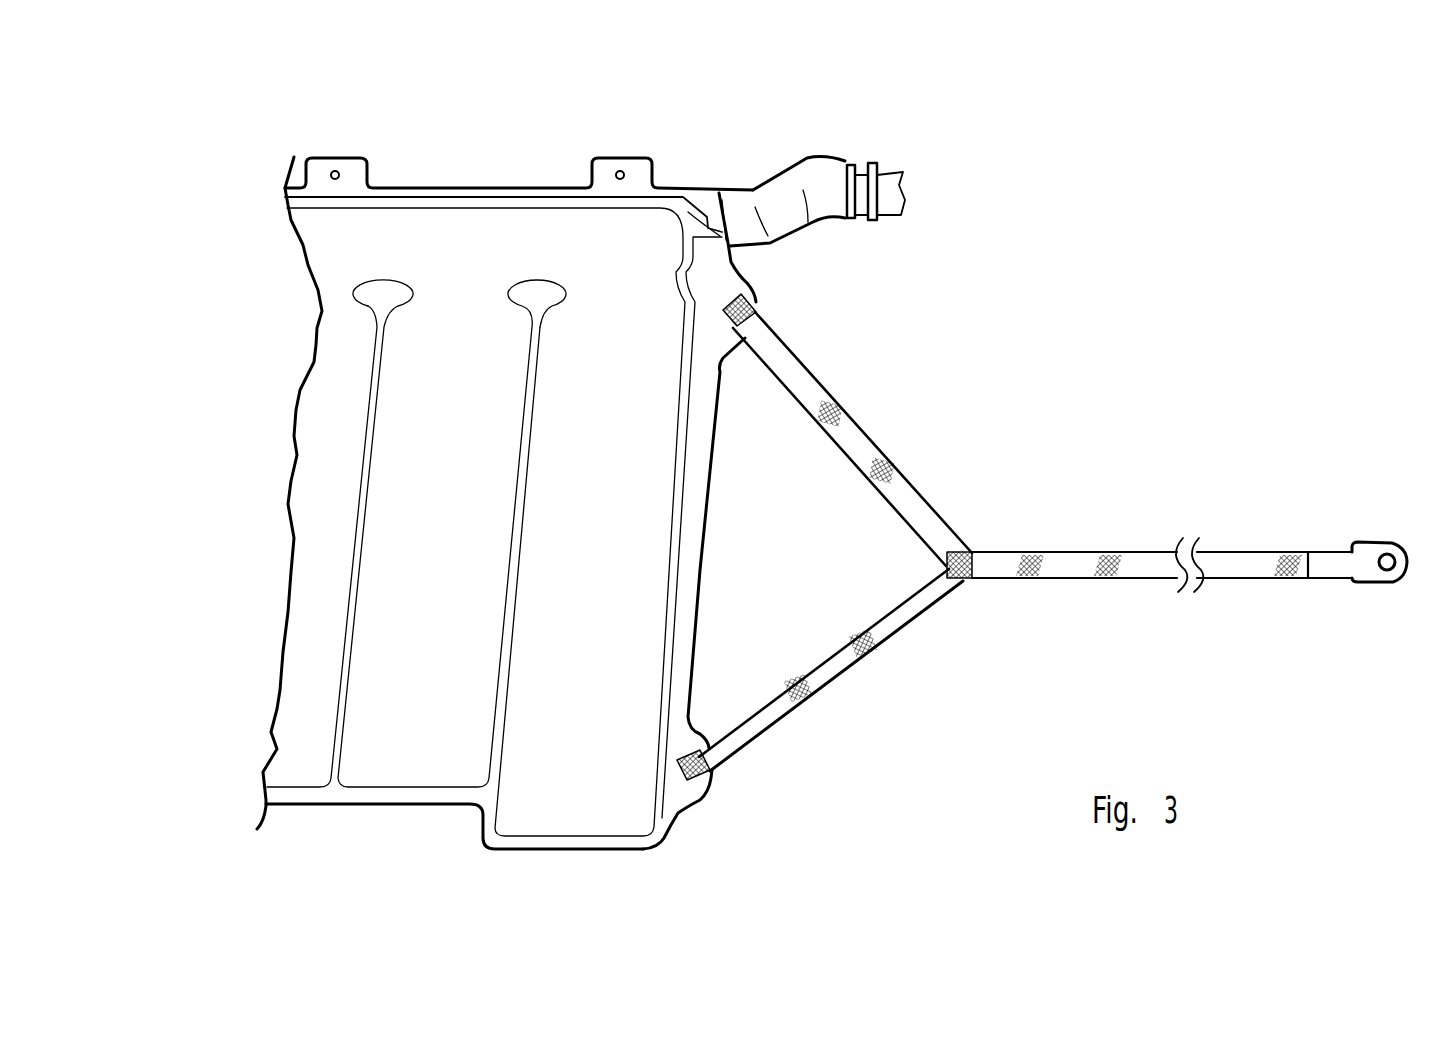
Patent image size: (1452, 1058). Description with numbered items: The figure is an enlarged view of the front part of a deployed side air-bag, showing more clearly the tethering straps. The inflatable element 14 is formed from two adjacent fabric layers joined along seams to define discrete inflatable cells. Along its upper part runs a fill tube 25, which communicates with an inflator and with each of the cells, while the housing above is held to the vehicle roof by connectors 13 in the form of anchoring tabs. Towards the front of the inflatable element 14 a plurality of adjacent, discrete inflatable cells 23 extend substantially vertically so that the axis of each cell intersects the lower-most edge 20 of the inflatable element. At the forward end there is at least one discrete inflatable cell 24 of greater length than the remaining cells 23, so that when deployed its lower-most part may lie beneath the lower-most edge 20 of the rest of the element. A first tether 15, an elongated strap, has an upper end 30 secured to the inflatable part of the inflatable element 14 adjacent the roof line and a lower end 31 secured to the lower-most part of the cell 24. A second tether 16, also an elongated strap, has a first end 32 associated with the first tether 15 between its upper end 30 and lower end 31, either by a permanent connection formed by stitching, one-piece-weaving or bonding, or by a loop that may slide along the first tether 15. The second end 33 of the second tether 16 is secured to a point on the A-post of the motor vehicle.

The connectors 13 is at (320, 165).
The inflatable element 14 is at (415, 165).
The first tether 15 is at (860, 440).
The second tether 16 is at (1145, 557).
The lower-most edge 20 is at (327, 807).
The inflatable cells 23 is at (410, 663).
The inflatable cell 24 is at (582, 793).
The fill tube 25 is at (483, 227).
The upper end 30 is at (753, 307).
The lower end 31 is at (707, 777).
The first end 32 is at (966, 580).
The second end 33 is at (1363, 573).